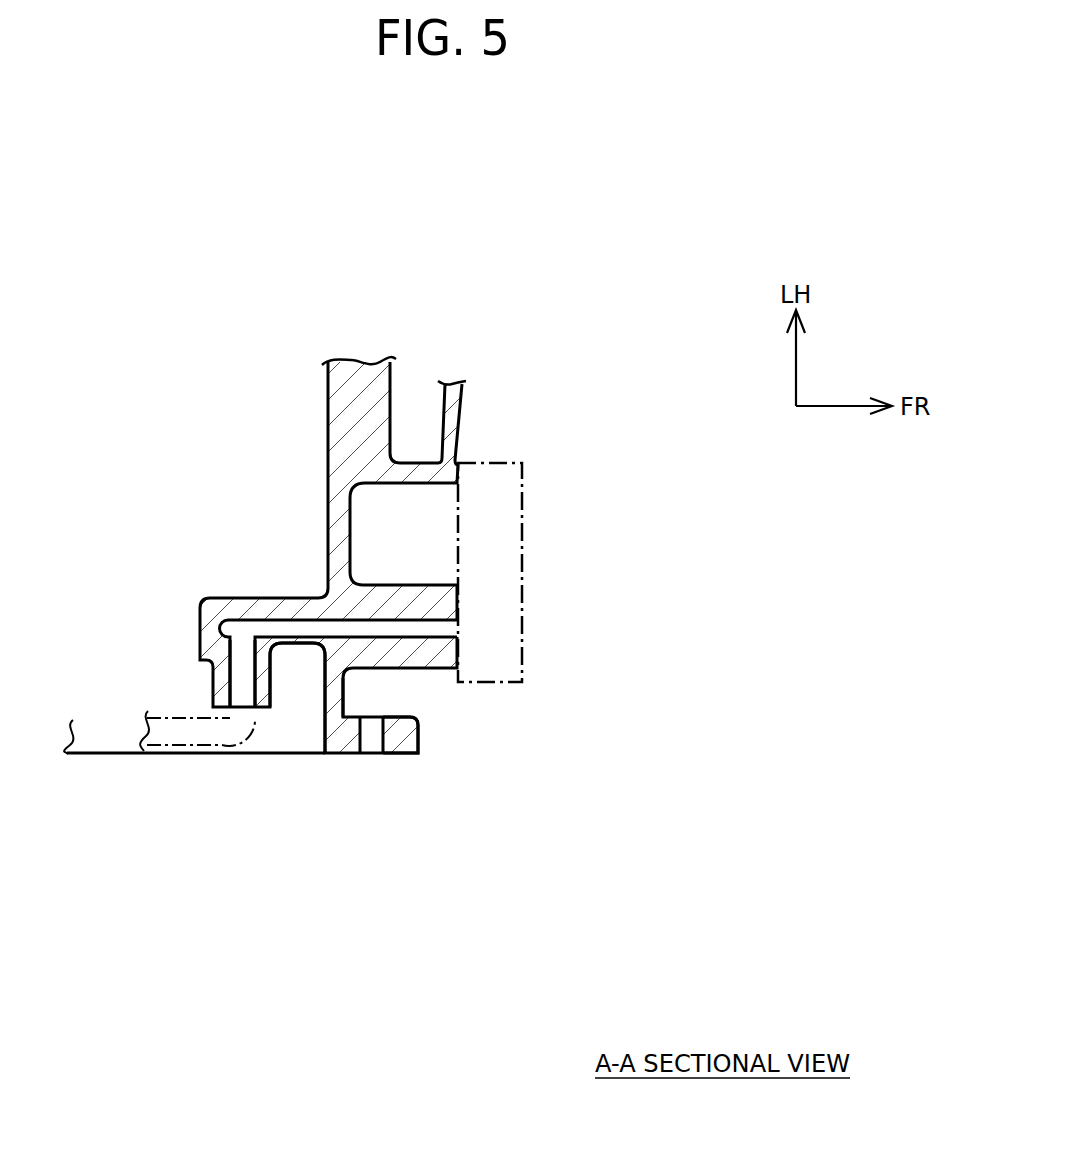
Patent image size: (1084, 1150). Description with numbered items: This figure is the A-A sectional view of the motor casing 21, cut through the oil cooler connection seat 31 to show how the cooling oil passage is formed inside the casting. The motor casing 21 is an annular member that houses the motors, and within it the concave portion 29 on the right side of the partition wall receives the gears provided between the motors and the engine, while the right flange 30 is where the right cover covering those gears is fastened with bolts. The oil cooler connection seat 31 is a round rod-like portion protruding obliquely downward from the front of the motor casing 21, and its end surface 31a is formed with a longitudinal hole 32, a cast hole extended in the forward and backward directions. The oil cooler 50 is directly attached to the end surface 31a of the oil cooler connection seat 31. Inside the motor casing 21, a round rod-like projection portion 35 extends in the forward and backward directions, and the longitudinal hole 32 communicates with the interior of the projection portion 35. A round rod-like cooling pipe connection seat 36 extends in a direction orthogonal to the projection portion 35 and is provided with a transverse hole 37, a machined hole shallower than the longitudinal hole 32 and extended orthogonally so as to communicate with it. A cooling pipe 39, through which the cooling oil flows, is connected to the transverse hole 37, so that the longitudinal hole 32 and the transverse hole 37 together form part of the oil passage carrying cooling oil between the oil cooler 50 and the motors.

The motor casing 21 is at (352, 361).
The concave portion 29 is at (400, 755).
The right flange 30 is at (370, 743).
The oil cooler connection seat 31 is at (425, 668).
The end surface 31a is at (458, 600).
The longitudinal hole 32 is at (440, 638).
The projection portion 35 is at (293, 647).
The cooling pipe connection seat 36 is at (267, 684).
The transverse hole 37 is at (257, 685).
The cooling pipe 39 is at (182, 745).
The oil cooler 50 is at (522, 542).